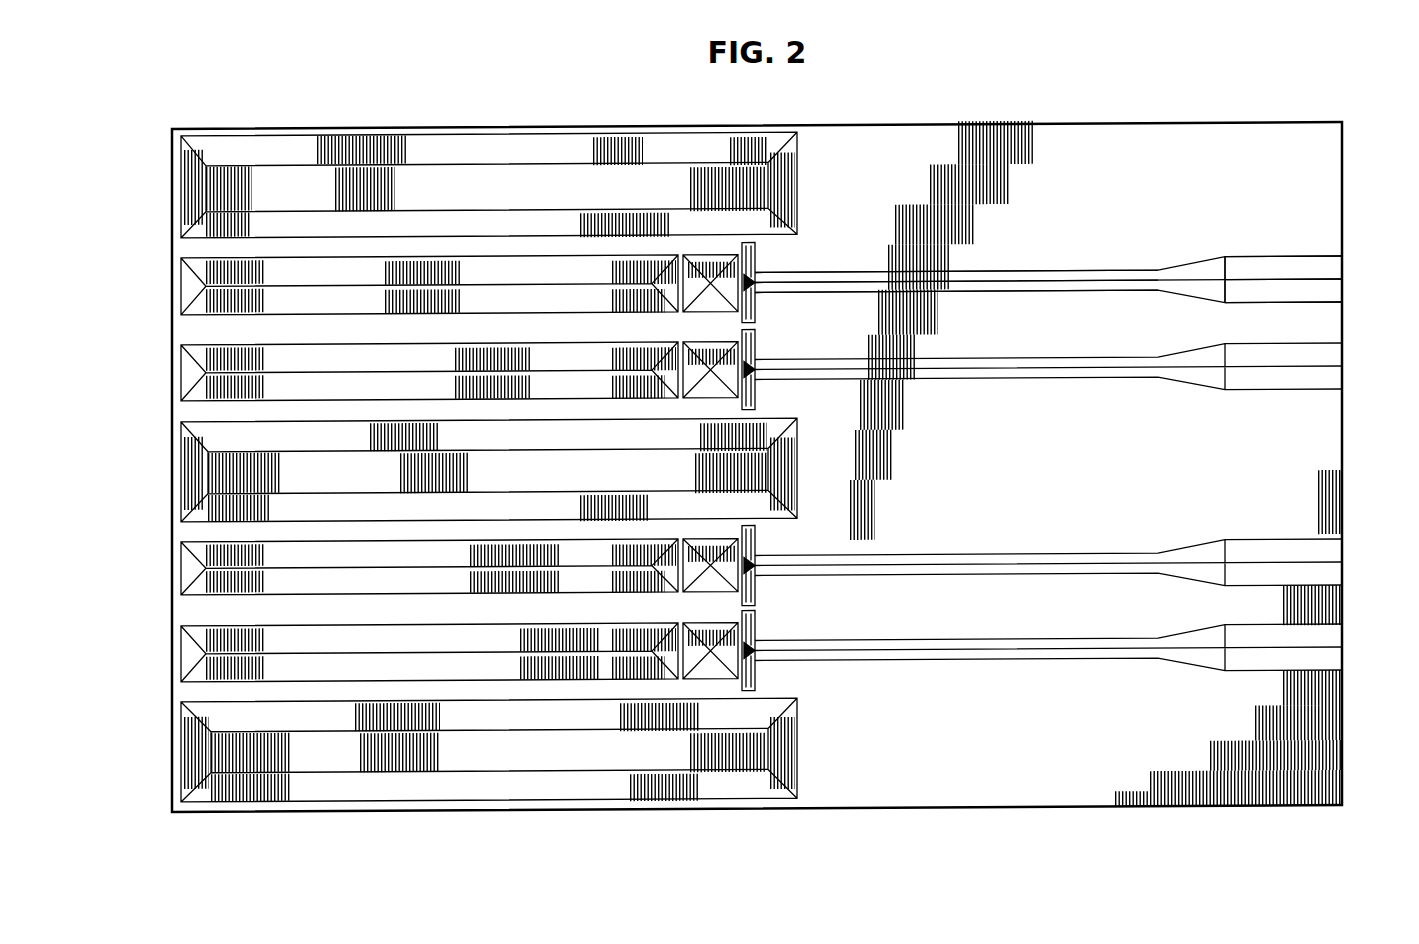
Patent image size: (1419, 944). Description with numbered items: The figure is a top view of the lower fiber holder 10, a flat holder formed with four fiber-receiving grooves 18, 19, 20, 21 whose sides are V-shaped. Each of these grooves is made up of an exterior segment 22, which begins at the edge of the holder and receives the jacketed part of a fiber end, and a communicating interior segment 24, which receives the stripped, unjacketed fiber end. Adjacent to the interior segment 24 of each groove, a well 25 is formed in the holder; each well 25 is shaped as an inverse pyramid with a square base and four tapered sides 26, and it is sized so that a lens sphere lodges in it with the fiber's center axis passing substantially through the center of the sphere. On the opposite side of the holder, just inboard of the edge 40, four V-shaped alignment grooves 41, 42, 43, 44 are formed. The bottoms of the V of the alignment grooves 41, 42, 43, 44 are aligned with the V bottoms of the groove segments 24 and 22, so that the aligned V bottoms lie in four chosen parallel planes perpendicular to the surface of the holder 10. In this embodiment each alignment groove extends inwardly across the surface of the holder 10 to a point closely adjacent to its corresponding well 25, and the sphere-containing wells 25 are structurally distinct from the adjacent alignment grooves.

The lower fiber holder 10 is at (961, 812).
The fiber-receiving groove 18 is at (1328, 641).
The fiber-receiving groove 19 is at (1325, 556).
The fiber-receiving groove 20 is at (1325, 363).
The fiber-receiving groove 21 is at (1325, 274).
The exterior segment 22 is at (1332, 257).
The interior segment 24 is at (855, 271).
The well 25 is at (714, 541).
The tapered side 26 is at (724, 568).
The edge 40 is at (176, 711).
The alignment groove 41 is at (181, 654).
The alignment groove 42 is at (181, 568).
The alignment groove 43 is at (181, 373).
The alignment groove 44 is at (181, 287).